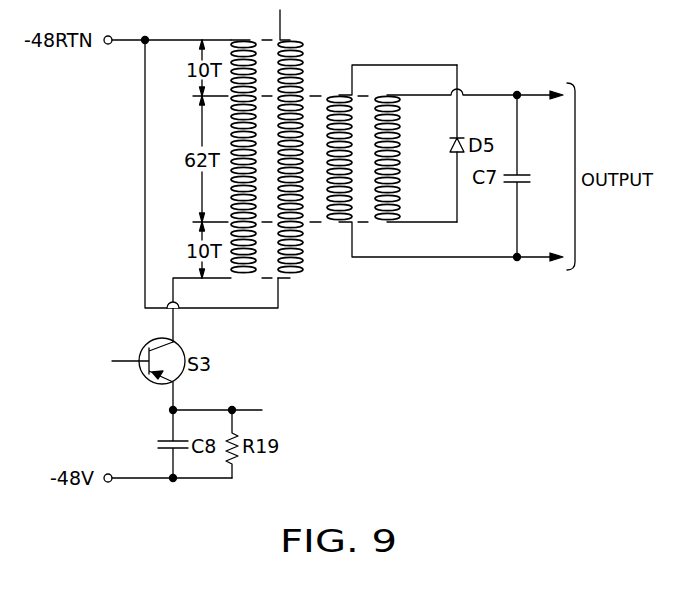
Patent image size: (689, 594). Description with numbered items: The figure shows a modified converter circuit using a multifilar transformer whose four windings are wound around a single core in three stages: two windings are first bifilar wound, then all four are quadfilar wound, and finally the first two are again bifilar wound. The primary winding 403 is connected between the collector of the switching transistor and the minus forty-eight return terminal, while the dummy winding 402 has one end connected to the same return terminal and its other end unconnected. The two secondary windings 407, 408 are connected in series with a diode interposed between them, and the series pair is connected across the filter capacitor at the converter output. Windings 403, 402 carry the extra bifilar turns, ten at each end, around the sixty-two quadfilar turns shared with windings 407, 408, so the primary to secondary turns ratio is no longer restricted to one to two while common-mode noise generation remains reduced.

The dummy winding 402 is at (299, 144).
The primary winding 403 is at (220, 180).
The secondary winding 407 is at (414, 161).
The secondary winding 408 is at (439, 147).